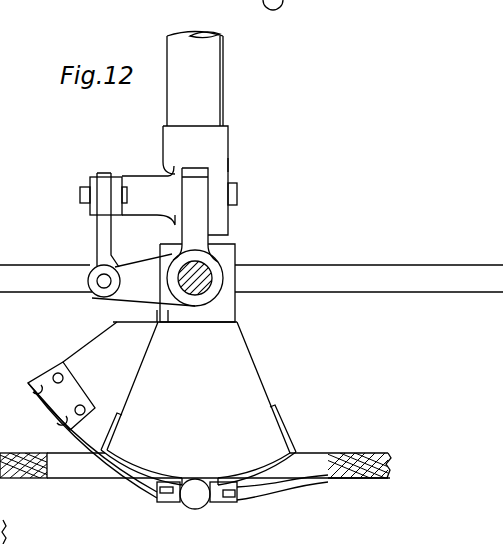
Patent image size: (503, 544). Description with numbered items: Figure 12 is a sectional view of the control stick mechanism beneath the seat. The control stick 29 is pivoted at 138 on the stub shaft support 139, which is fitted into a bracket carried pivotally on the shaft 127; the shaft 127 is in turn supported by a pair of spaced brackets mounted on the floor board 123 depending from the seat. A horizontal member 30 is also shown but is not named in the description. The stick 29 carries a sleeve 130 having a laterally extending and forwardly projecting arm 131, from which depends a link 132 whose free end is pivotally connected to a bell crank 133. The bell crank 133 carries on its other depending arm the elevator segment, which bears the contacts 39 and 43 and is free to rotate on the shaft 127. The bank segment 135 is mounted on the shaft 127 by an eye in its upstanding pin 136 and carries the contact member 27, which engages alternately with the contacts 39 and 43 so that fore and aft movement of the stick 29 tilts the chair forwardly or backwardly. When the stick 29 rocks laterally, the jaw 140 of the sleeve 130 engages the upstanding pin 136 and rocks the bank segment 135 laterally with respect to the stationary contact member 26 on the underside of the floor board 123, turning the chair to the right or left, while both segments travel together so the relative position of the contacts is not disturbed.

The control stick 29 is at (212, 61).
The sleeve 130 is at (210, 136).
The jaw 140 is at (223, 165).
The arm 131 is at (141, 183).
The link 132 is at (103, 233).
The upstanding pin 136 is at (197, 181).
The pivot 138 is at (237, 193).
The stub shaft support 139 is at (200, 230).
The rail 30 is at (306, 270).
The bell crank 133 is at (112, 303).
The shaft 127 is at (213, 281).
The bank segment 135 is at (80, 353).
The contact 39 is at (163, 445).
The contact 43 is at (253, 445).
The contact member 27 is at (132, 481).
The contact member 26 is at (248, 495).
The floor board 123 is at (337, 452).